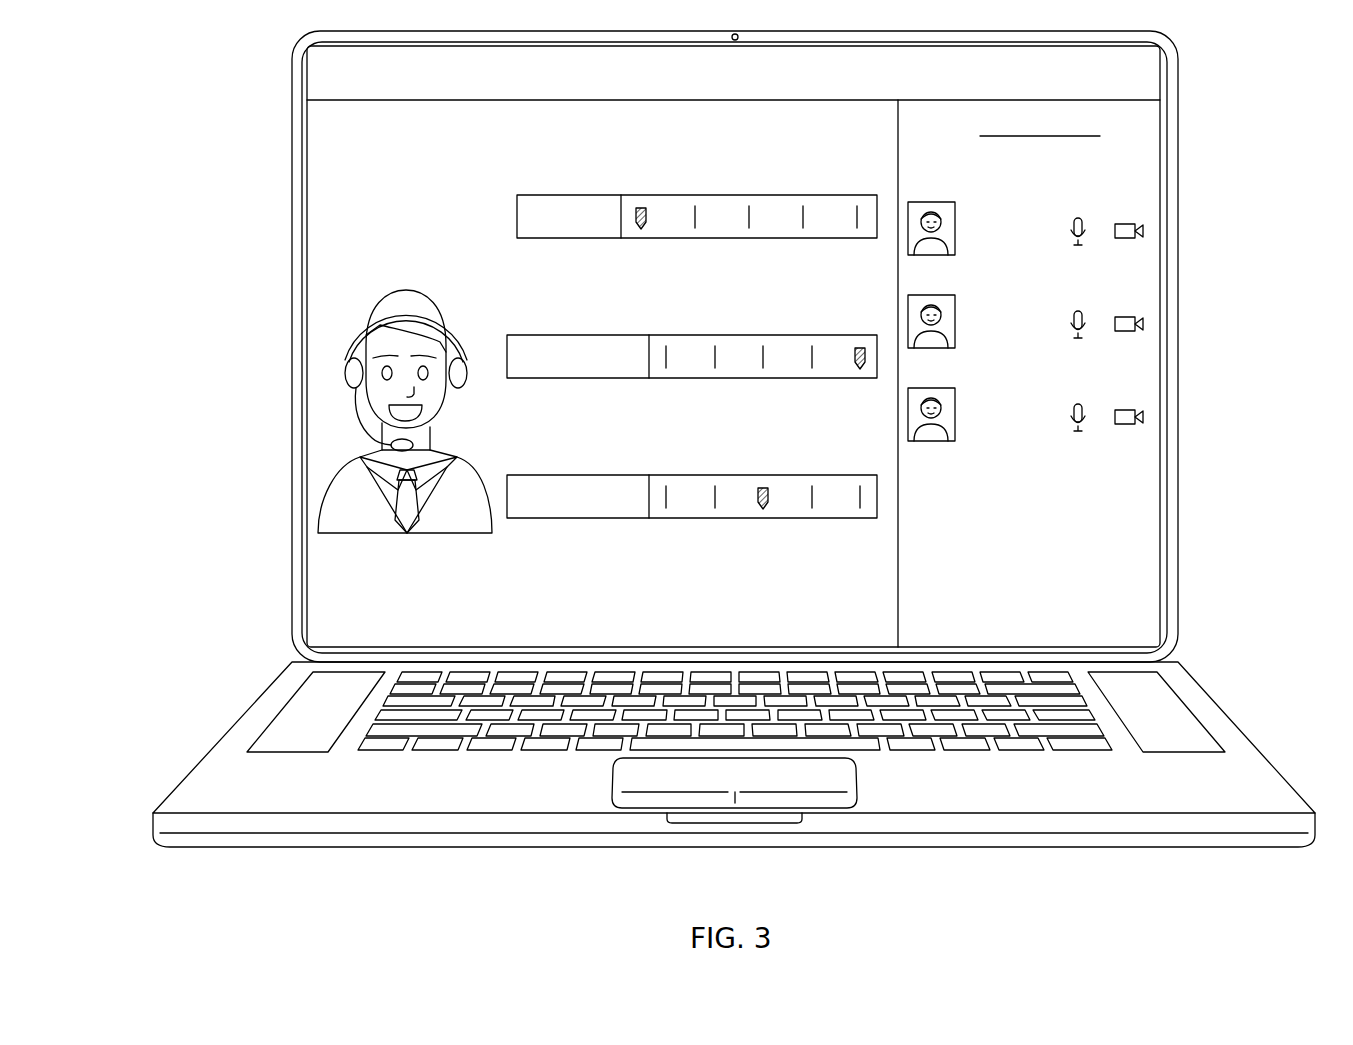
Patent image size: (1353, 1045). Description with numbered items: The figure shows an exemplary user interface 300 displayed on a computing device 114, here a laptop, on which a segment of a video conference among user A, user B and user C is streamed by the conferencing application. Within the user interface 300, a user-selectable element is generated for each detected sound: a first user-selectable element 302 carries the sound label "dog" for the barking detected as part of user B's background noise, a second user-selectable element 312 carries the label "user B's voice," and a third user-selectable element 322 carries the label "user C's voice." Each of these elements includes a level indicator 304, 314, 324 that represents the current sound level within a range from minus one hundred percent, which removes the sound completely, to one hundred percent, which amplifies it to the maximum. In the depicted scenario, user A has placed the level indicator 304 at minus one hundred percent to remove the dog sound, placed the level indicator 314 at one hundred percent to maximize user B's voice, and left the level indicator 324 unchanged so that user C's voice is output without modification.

The computing device 114 is at (1182, 663).
The user interface 300 is at (268, 128).
The first user-selectable element 302 is at (758, 194).
The level indicator 304 is at (637, 203).
The second user-selectable element 312 is at (663, 333).
The level indicator 314 is at (857, 343).
The third user-selectable element 322 is at (663, 473).
The level indicator 324 is at (760, 483).